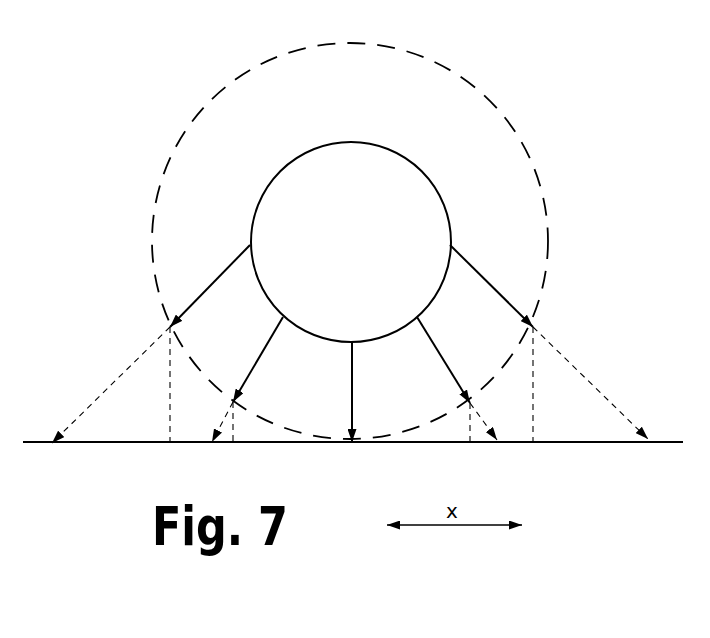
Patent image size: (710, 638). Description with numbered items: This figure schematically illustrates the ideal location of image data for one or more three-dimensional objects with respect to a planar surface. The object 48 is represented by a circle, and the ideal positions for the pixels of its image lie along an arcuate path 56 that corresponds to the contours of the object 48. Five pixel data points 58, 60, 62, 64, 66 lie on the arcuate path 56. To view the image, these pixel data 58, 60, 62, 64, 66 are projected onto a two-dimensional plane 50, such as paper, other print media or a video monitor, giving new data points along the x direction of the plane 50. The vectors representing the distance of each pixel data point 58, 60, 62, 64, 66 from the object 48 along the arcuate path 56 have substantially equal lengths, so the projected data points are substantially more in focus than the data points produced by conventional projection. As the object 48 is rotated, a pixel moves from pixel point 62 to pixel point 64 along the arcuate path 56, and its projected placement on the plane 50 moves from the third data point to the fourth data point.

The object 48 is at (452, 208).
The planar surface 50 is at (572, 445).
The arcuate path 56 is at (484, 90).
The pixel data 58 is at (165, 324).
The pixel data 60 is at (238, 403).
The pixel data 62 is at (357, 438).
The pixel data 64 is at (467, 402).
The pixel data 66 is at (538, 325).